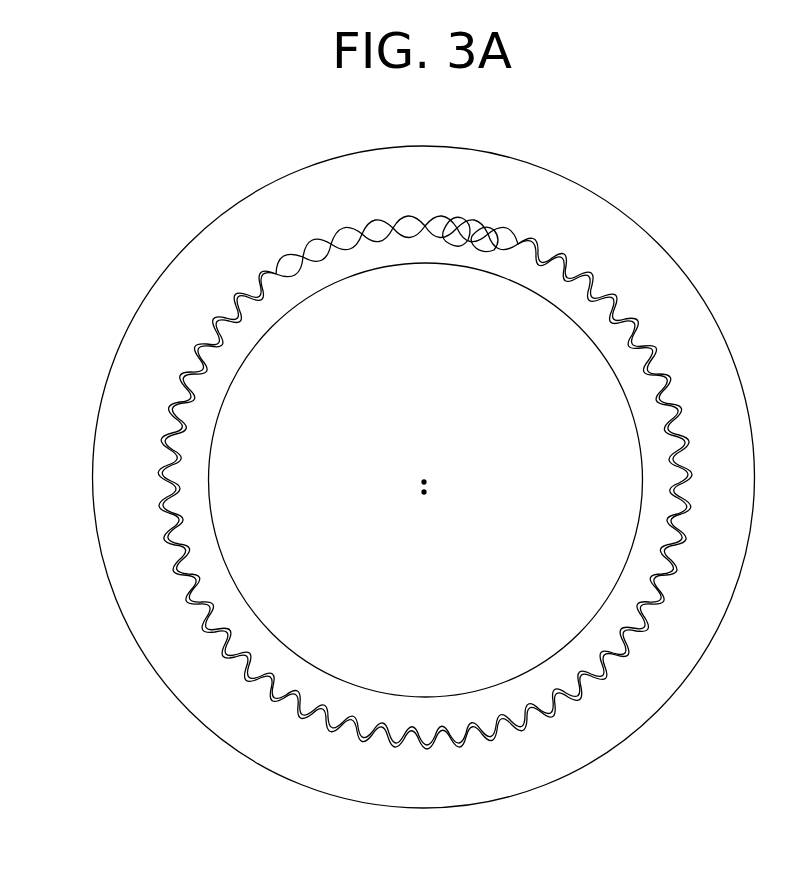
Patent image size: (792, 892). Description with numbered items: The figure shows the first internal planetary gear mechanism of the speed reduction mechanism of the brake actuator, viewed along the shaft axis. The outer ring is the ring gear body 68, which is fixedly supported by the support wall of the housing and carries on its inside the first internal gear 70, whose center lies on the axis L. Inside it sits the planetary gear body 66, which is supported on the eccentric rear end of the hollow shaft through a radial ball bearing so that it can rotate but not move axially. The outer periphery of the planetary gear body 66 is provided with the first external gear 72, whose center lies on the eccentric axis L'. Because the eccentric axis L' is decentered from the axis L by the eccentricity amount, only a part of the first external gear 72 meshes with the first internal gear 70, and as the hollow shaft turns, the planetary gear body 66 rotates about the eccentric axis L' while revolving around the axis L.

The planetary gear body 66 is at (430, 252).
The ring gear body 68 is at (562, 205).
The first internal gear 70 is at (460, 228).
The first external gear 72 is at (500, 238).
The axis L is at (466, 466).
The eccentric axis L' is at (464, 512).